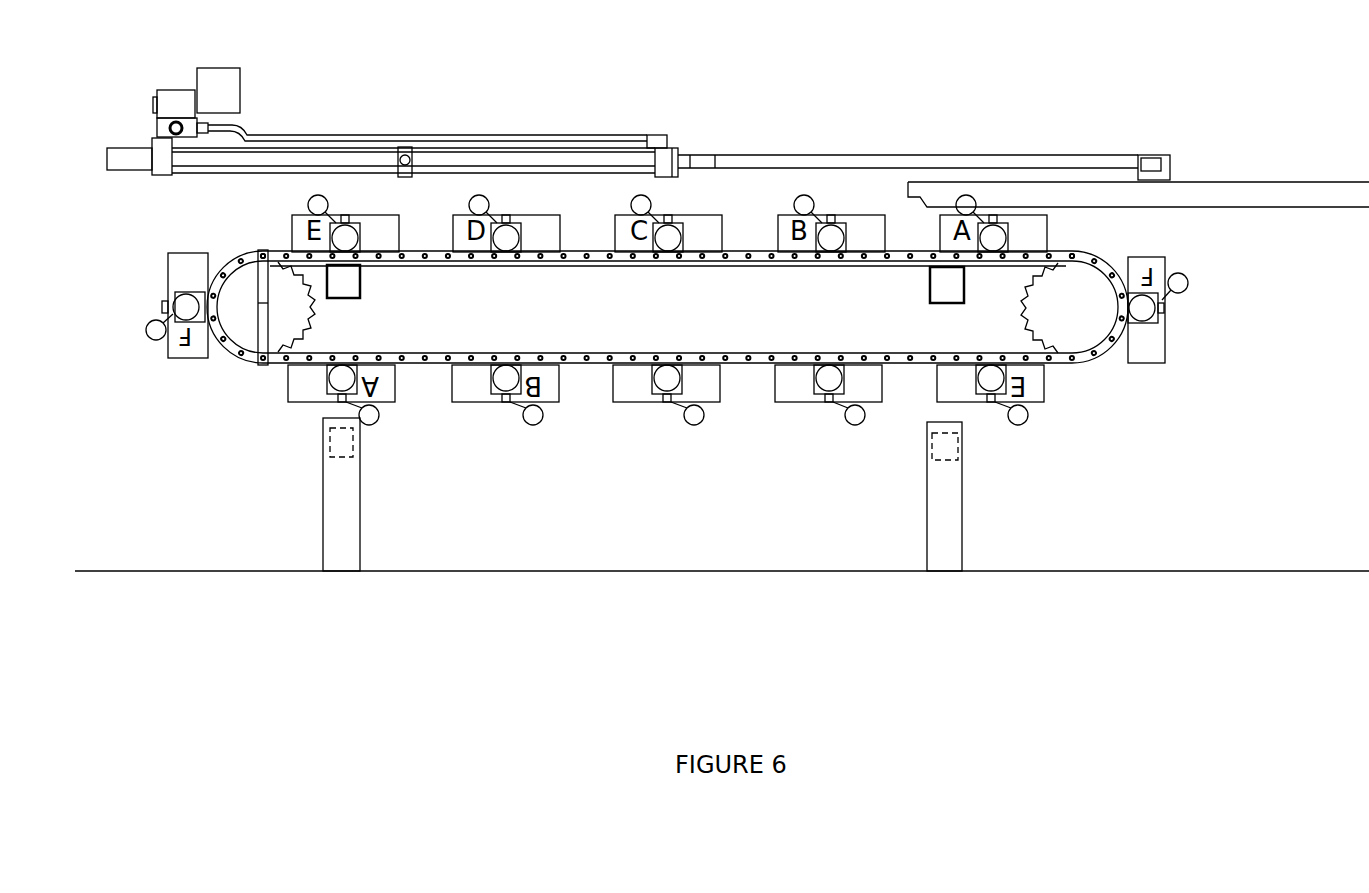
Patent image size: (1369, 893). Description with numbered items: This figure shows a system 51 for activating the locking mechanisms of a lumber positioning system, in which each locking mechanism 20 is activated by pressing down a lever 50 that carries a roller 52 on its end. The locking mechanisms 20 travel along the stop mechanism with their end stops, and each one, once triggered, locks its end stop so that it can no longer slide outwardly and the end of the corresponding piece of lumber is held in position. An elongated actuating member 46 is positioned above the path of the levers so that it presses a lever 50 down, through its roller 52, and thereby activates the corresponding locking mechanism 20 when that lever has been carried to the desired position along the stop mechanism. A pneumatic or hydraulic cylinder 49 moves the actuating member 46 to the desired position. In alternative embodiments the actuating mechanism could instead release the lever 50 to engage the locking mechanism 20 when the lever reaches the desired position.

The locking mechanism 20 is at (739, 446).
The actuating member 46 is at (1221, 182).
The pneumatic or hydraulic cylinder 49 is at (662, 136).
The lever 50 is at (673, 405).
The system 51 is at (638, 116).
The roller 52 is at (690, 425).